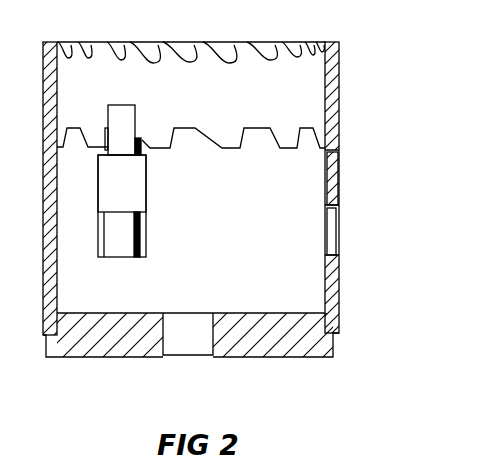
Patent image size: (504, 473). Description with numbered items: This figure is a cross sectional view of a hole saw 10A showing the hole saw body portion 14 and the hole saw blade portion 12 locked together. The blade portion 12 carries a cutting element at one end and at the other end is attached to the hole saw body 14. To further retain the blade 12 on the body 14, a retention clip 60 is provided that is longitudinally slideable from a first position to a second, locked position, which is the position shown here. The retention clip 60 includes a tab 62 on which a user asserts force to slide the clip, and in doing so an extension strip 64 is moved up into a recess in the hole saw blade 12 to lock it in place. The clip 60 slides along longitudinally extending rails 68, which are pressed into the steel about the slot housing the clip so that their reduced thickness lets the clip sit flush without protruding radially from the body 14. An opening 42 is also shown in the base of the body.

The blade assembly 10A is at (385, 48).
The hole saw blade portion 12 is at (342, 97).
The hole saw body portion 14 is at (252, 236).
The notch / opening in base 42 is at (193, 333).
The retention clip 60 is at (155, 220).
The tab 62 is at (130, 183).
The extension strip 64 is at (137, 107).
The longitudinally extending rails 68 is at (147, 238).